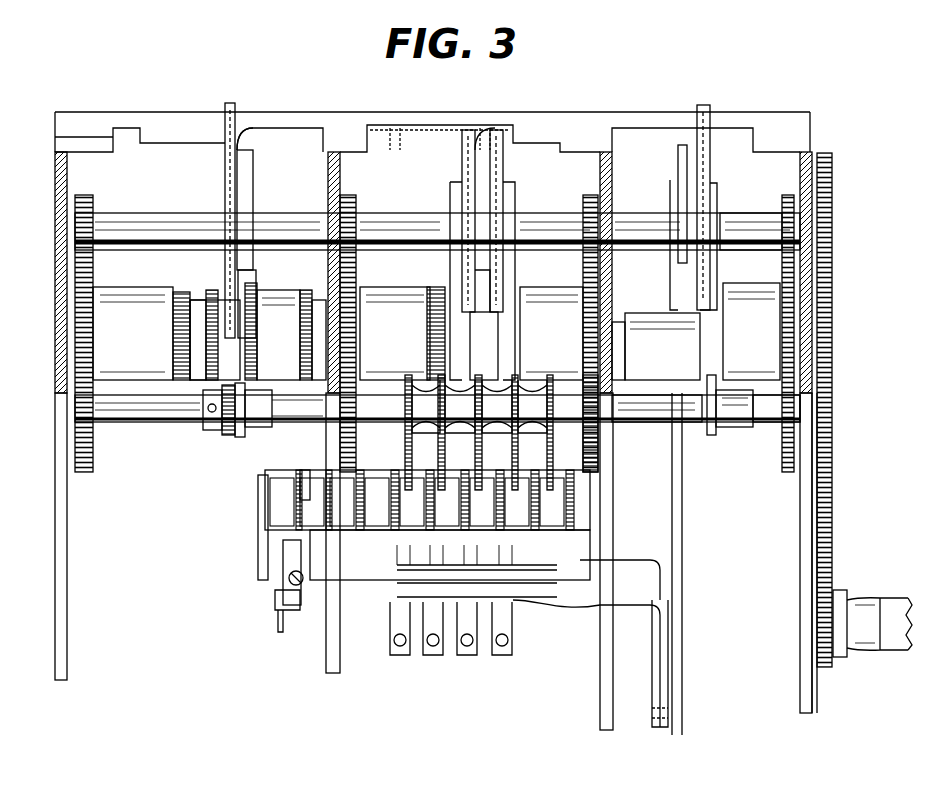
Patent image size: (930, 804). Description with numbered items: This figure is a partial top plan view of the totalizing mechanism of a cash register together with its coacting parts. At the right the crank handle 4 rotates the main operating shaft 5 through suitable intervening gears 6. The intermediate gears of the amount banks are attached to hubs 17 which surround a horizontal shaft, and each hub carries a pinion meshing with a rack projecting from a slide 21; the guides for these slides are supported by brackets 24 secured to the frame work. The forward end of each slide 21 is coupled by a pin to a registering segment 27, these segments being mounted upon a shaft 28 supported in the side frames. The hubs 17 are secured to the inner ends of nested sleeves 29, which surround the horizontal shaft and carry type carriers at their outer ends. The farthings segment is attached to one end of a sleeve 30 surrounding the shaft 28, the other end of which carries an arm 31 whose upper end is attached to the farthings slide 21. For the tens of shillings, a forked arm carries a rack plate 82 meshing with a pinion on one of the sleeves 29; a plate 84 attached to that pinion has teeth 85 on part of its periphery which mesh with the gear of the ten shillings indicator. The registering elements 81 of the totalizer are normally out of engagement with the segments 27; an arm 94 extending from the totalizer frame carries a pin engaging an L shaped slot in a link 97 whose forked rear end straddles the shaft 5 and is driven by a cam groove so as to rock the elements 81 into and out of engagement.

The crank handle 4 is at (878, 598).
The main operating shaft 5 is at (756, 216).
The intervening gears 6 is at (832, 362).
The hub 17 is at (758, 270).
The slide 21 is at (233, 322).
The bracket 24 is at (248, 162).
The registering segment 27 is at (583, 440).
The shaft 28 is at (130, 420).
The nested sleeve 29 is at (650, 318).
The sleeve 30 is at (660, 425).
The arm 31 is at (713, 437).
The registering element 81 is at (410, 468).
The rack plate 82 is at (303, 288).
The plate 84 is at (262, 278).
The teeth 85 is at (278, 335).
The arm 94 is at (655, 692).
The link 97 is at (682, 520).